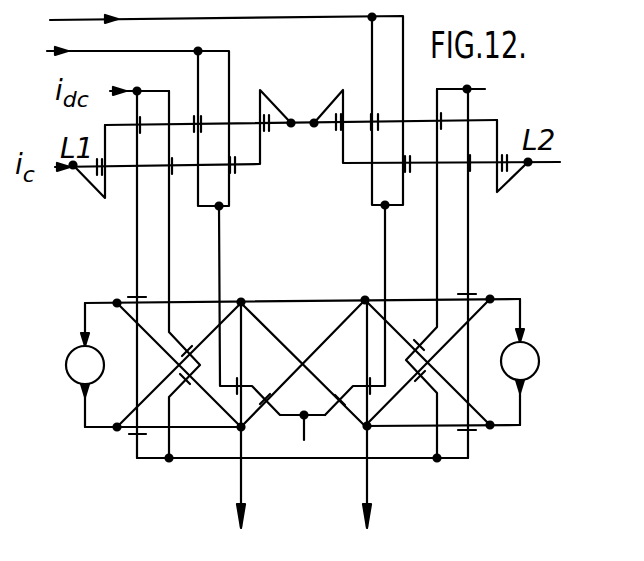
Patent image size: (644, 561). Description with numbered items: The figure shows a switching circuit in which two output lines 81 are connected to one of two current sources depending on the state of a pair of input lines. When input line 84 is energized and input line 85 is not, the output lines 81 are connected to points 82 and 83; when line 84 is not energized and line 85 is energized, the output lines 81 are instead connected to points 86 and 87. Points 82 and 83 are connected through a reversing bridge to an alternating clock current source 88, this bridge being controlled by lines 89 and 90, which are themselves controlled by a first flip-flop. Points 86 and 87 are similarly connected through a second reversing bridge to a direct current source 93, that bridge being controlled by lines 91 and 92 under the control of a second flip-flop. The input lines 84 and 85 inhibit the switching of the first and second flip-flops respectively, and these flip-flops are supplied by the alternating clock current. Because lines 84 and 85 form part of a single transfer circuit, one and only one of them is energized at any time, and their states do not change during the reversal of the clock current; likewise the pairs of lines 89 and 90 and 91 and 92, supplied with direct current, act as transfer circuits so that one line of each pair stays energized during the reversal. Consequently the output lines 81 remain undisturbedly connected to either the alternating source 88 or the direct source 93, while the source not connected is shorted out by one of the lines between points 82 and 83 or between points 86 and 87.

The output lines 81 is at (363, 492).
The point 82 is at (238, 432).
The point 83 is at (241, 302).
The input line 84 is at (175, 50).
The input line 85 is at (314, 18).
The point 86 is at (368, 429).
The point 87 is at (365, 299).
The alternating clock current source 88 is at (74, 386).
The line 89 is at (137, 240).
The line 90 is at (169, 265).
The line 91 is at (437, 240).
The line 92 is at (469, 241).
The direct current source 93 is at (534, 349).